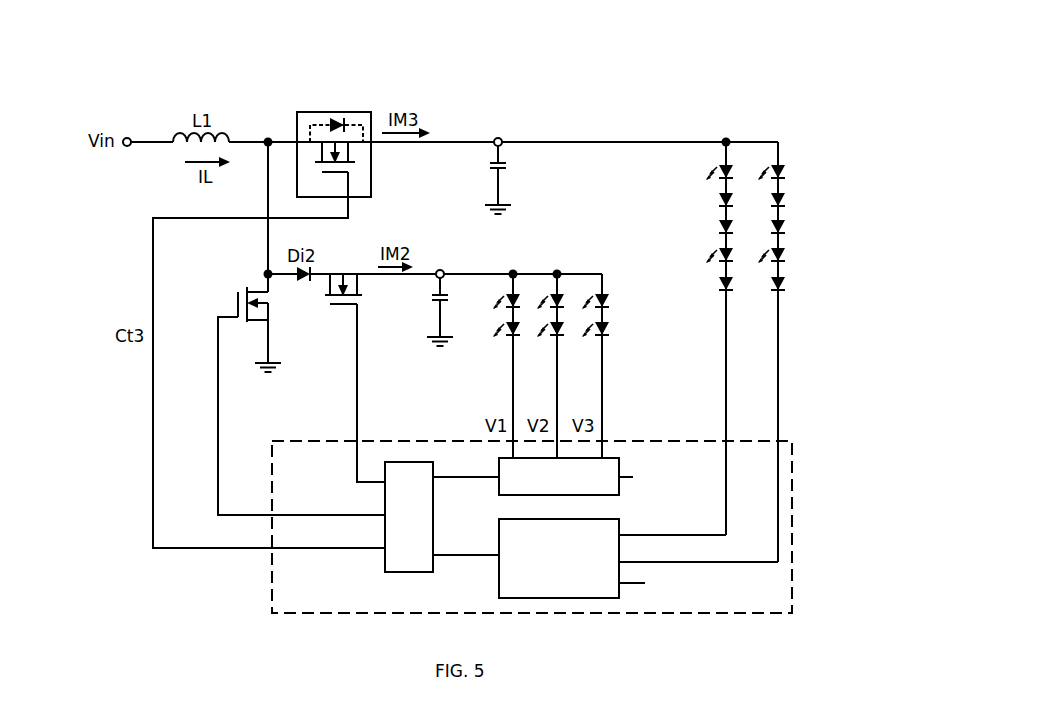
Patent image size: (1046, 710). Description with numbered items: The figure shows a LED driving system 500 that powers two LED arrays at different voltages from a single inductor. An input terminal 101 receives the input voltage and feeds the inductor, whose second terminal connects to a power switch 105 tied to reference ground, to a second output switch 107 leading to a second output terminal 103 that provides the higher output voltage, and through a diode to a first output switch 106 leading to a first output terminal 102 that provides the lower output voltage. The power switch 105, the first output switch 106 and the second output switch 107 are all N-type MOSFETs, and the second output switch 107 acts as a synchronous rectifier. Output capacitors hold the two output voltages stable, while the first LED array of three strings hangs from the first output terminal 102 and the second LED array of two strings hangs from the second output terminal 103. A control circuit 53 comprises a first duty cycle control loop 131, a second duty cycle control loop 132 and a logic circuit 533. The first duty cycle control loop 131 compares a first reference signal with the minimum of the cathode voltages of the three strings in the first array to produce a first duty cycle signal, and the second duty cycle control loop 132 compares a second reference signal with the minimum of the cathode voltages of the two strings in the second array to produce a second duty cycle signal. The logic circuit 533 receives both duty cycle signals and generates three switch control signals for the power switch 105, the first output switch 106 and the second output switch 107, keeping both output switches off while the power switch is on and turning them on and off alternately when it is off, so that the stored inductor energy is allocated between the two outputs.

The input terminal 101 is at (131, 138).
The second output switch 107 is at (310, 112).
The second output terminal 103 is at (496, 138).
The first output terminal 102 is at (439, 271).
The power switch 105 is at (284, 389).
The first output switch 106 is at (373, 365).
The control circuit 53 is at (272, 479).
The logic circuit 533 is at (394, 526).
The first duty cycle control loop 131 is at (545, 486).
The second duty cycle control loop 132 is at (541, 564).
The LED driving system 500 is at (727, 93).